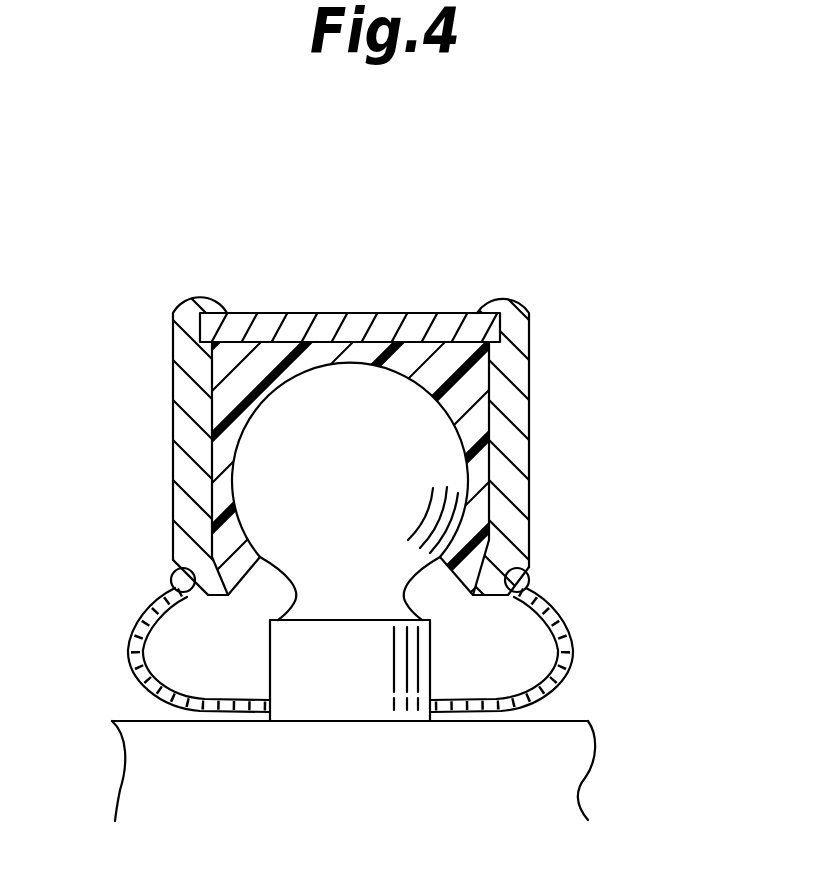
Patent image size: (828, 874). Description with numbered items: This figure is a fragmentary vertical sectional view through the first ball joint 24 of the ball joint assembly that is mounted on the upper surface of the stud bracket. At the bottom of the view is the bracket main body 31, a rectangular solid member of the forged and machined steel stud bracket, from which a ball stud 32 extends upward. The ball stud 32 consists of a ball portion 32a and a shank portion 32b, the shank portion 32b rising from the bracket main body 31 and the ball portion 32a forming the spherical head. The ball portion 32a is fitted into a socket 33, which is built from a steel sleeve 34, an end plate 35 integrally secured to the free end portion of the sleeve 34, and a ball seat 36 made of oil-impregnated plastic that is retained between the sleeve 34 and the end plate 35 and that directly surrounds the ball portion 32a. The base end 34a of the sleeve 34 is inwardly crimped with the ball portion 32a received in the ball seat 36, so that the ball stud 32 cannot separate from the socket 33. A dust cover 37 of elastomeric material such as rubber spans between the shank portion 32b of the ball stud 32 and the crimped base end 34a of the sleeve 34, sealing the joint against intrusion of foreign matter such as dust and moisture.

The first ball joint 24 is at (404, 464).
The bracket main body 31 is at (131, 720).
The ball stud 32 is at (450, 605).
The ball portion 32a is at (447, 432).
The shank portion 32b is at (347, 697).
The socket 33 is at (404, 465).
The sleeve 34 is at (172, 463).
The base end 34a is at (522, 578).
The end plate 35 is at (325, 320).
The ball seat 36 is at (252, 347).
The dust cover 37 is at (188, 598).